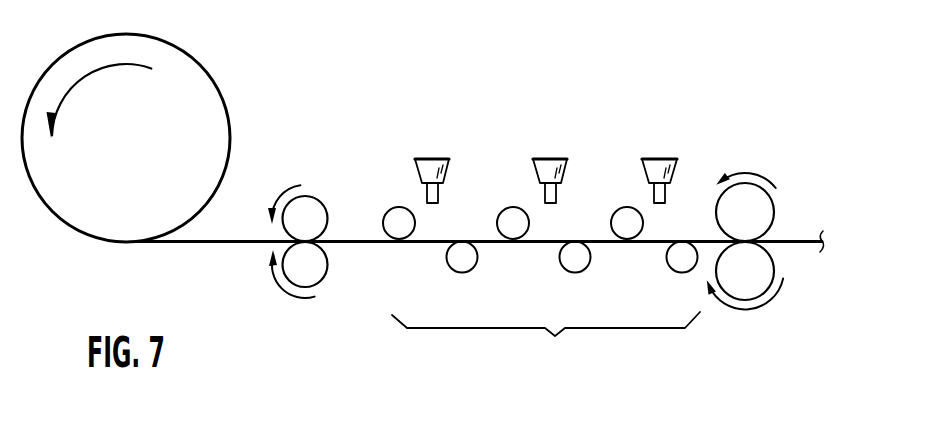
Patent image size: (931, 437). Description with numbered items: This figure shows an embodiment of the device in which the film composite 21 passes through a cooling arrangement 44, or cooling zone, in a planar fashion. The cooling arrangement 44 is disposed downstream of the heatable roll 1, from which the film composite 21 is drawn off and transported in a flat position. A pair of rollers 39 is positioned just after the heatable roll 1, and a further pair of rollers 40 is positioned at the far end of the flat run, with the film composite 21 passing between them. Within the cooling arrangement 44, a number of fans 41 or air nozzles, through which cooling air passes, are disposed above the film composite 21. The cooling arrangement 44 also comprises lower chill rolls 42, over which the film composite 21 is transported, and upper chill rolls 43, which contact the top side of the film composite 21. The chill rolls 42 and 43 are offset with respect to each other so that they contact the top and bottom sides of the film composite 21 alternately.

The heatable roll 1 is at (188, 70).
The film composite 21 is at (218, 245).
The feed roller pair 39 is at (317, 210).
The take-off roller pair 40 is at (767, 200).
The fans 41 is at (437, 158).
The lower chill rolls 42 is at (678, 262).
The upper chill rolls 43 is at (408, 223).
The cooling arrangement 44 is at (555, 336).